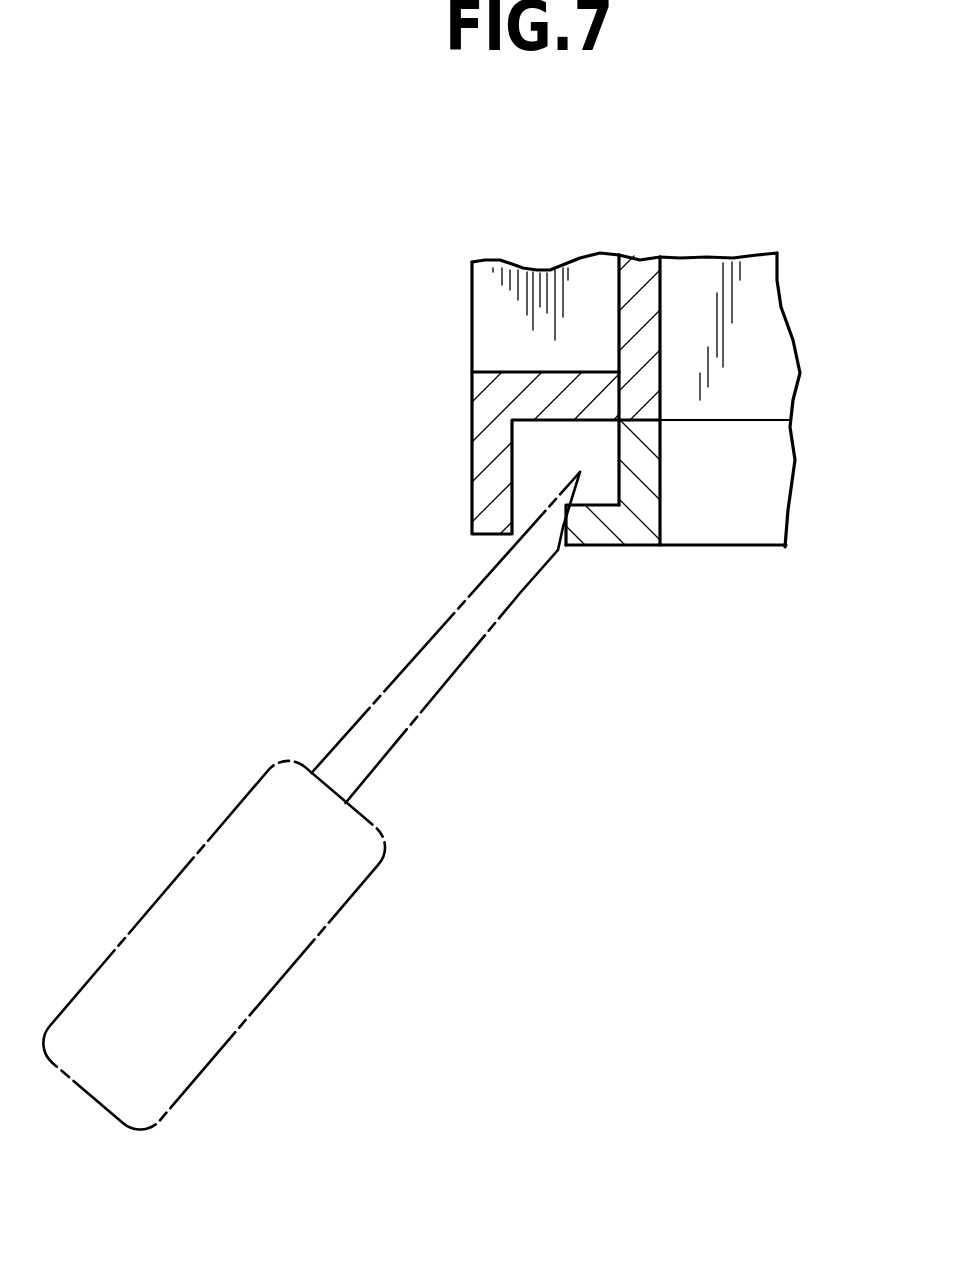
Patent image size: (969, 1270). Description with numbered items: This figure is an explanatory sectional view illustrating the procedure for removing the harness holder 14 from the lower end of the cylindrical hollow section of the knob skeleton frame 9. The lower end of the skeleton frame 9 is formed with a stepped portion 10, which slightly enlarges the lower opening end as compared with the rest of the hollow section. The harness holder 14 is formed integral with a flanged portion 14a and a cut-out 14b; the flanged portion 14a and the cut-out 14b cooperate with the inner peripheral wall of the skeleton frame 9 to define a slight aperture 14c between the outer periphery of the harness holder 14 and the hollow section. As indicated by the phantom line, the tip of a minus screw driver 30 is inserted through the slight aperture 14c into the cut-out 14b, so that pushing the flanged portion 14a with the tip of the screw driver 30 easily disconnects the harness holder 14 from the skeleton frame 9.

The knob skeleton frame 9 is at (643, 283).
The stepped portion 10 is at (567, 410).
The harness holder 14 is at (752, 497).
The flanged portion 14a is at (586, 527).
The cut-out 14b is at (628, 465).
The slight aperture 14c is at (557, 540).
The minus screw driver 30 is at (337, 856).